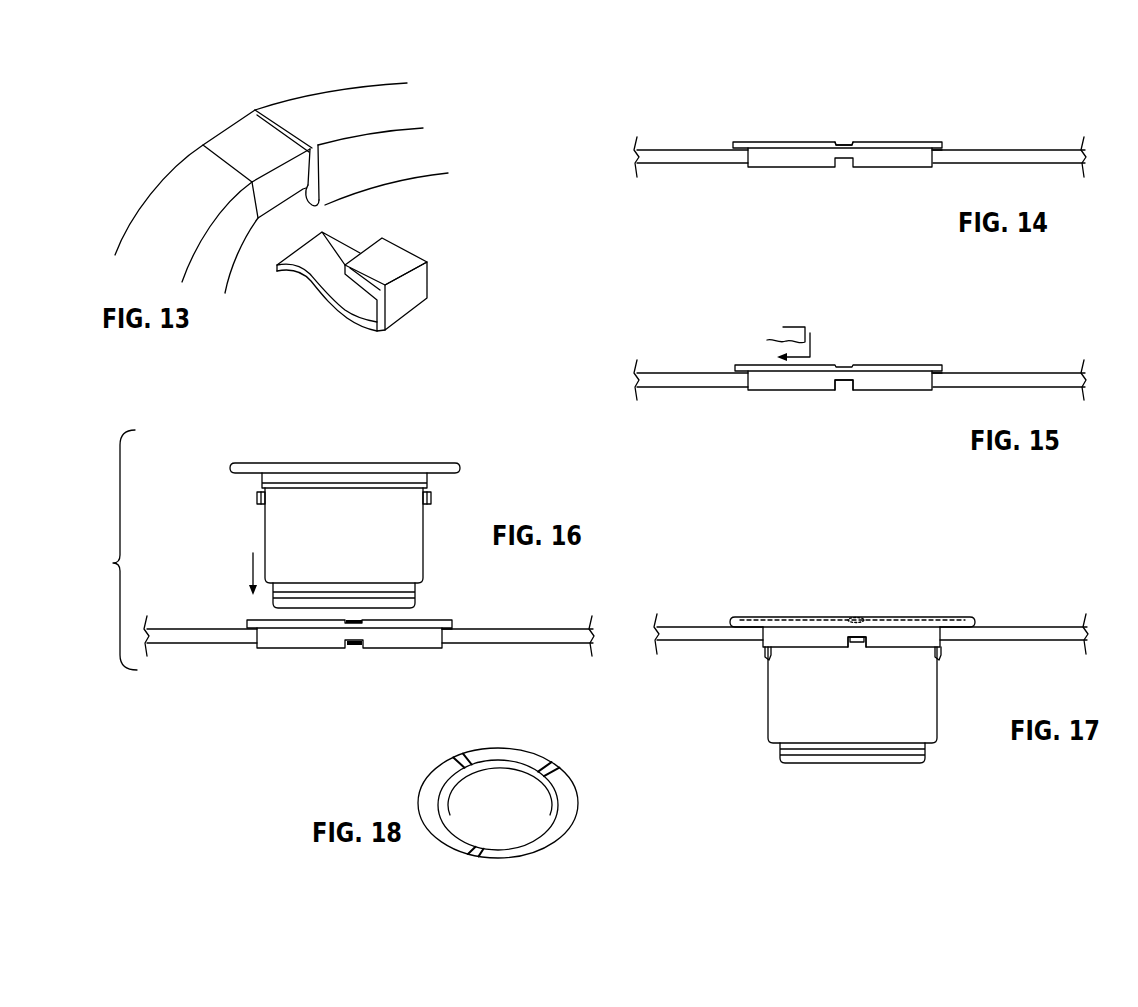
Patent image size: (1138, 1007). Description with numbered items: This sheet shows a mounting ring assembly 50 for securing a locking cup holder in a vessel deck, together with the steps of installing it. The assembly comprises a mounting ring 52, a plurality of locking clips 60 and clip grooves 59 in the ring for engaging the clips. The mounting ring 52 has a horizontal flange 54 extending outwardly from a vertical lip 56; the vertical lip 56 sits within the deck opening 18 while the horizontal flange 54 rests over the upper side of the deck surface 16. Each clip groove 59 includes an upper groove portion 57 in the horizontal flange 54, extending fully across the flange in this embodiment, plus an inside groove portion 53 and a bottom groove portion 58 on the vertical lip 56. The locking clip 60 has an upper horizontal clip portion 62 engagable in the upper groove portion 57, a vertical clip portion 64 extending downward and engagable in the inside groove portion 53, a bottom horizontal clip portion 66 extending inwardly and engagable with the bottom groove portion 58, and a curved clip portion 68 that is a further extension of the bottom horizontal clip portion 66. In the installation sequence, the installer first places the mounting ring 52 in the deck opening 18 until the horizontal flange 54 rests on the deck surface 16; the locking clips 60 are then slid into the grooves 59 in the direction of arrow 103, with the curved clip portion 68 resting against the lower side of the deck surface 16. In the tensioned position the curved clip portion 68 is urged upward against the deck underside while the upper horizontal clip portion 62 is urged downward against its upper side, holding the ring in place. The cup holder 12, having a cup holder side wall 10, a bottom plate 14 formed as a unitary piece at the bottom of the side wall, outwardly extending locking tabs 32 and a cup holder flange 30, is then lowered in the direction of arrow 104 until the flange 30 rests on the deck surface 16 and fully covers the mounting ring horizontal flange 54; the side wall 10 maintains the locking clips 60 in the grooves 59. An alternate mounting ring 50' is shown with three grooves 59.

In FIG. 16, the cup holder side wall 10 is at (265, 521).
In FIG. 16, the cup holder 12 is at (381, 517).
In FIG. 17, the cup holder 12 is at (851, 665).
In FIG. 16, the bottom plate 14 is at (311, 605).
In FIG. 14, the deck surface 16 is at (702, 158).
In FIG. 15, the deck surface 16 is at (694, 378).
In FIG. 16, the deck surface 16 is at (527, 633).
In FIG. 17, the deck surface 16 is at (688, 632).
In FIG. 14, the deck opening 18 is at (936, 152).
In FIG. 15, the deck opening 18 is at (936, 377).
In FIG. 16, the deck opening 18 is at (447, 634).
In FIG. 16, the cup holder flange 30 is at (450, 467).
In FIG. 17, the cup holder flange 30 is at (745, 616).
In FIG. 16, the locking tabs 32 is at (257, 500).
In FIG. 17, the locking tabs 32 is at (765, 657).
In FIG. 13, the mounting ring assembly 50 is at (265, 164).
In FIG. 18, the mounting ring 50' is at (535, 797).
In FIG. 13, the mounting ring 52 is at (172, 172).
In FIG. 15, the mounting ring 52 is at (890, 380).
In FIG. 16, the mounting ring 52 is at (349, 638).
In FIG. 13, the inside groove portion 53 is at (318, 163).
In FIG. 13, the horizontal flange 54 is at (377, 82).
In FIG. 14, the horizontal flange 54 is at (740, 141).
In FIG. 16, the horizontal flange 54 is at (247, 620).
In FIG. 17, the horizontal flange 54 is at (787, 620).
In FIG. 14, the vertical lip 56 is at (808, 158).
In FIG. 13, the upper groove portion 57 is at (283, 128).
In FIG. 13, the bottom groove portion 58 is at (327, 207).
In FIG. 14, the clip grooves 59 is at (843, 141).
In FIG. 15, the clip grooves 59 is at (840, 385).
In FIG. 17, the clip grooves 59 is at (870, 637).
In FIG. 18, the clip grooves 59 is at (487, 840).
In FIG. 13, the locking clip 60 is at (400, 284).
In FIG. 15, the locking clip 60 is at (793, 327).
In FIG. 16, the locking clip 60 is at (353, 645).
In FIG. 17, the locking clip 60 is at (856, 648).
In FIG. 13, the upper horizontal clip portion 62 is at (397, 253).
In FIG. 13, the vertical clip portion 64 is at (420, 285).
In FIG. 13, the bottom horizontal clip portion 66 is at (357, 322).
In FIG. 13, the curved clip portion 68 is at (305, 280).
In FIG. 15, the direction arrow 103 is at (812, 335).
In FIG. 16, the direction arrow 104 is at (250, 567).